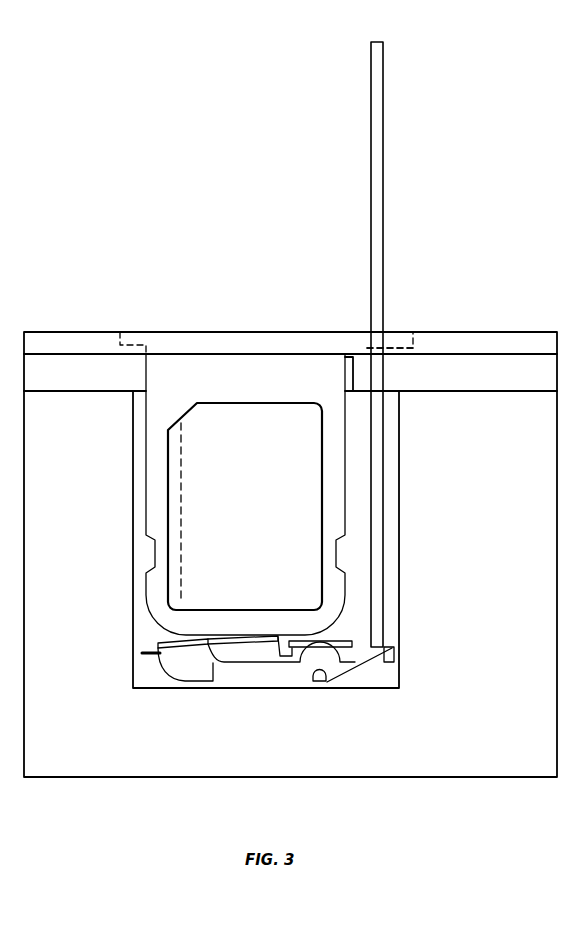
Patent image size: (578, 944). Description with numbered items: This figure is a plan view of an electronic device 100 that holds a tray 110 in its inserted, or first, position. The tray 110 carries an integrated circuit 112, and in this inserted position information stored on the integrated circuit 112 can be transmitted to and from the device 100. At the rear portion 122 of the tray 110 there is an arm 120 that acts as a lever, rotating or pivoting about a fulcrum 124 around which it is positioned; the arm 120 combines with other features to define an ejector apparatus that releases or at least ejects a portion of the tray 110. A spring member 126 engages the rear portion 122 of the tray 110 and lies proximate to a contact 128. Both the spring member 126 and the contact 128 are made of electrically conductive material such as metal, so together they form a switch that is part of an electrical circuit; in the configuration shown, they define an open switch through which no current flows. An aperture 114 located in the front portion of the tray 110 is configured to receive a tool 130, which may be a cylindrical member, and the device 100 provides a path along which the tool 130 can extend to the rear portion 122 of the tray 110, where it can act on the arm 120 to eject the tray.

The electronic device 100 is at (148, 148).
The tray 110 is at (145, 380).
The integrated circuit 112 is at (258, 515).
The aperture 114 is at (360, 317).
The arm 120 is at (213, 682).
The rear portion 122 is at (265, 657).
The fulcrum 124 is at (326, 680).
The spring member 126 is at (255, 646).
The contact 128 is at (388, 668).
The tool 130 is at (372, 123).